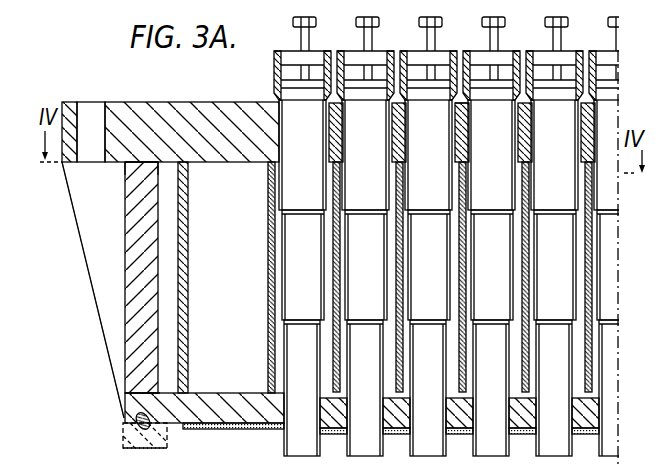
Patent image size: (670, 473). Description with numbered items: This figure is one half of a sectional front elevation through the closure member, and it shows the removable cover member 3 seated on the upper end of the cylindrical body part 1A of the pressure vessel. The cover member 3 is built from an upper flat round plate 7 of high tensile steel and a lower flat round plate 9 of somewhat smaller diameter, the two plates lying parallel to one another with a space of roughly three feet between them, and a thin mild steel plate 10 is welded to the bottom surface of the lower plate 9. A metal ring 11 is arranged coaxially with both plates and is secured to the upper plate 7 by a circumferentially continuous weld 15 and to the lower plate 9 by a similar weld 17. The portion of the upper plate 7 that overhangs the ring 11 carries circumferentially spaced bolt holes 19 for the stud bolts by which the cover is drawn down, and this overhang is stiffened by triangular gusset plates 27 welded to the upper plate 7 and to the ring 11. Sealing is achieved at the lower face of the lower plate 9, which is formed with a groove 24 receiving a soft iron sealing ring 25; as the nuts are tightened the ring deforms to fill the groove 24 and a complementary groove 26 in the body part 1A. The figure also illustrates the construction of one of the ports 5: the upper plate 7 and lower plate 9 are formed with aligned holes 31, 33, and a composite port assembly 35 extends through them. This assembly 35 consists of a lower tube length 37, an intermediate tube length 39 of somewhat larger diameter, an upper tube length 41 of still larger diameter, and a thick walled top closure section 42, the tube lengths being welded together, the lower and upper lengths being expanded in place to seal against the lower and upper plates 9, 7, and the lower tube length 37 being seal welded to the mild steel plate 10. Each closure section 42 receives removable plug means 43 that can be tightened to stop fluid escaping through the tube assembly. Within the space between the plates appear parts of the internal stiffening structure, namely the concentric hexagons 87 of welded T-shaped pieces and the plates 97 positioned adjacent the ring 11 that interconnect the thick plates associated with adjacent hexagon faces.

The cylindrical body part 1A is at (125, 442).
The cover member 3 is at (112, 235).
The ports 5 is at (443, 236).
The upper flat round plate 7 is at (211, 116).
The lower flat round plate 9 is at (125, 403).
The mild steel plate 10 is at (275, 424).
The metal ring 11 is at (147, 294).
The circumferentially continuous weld 15 is at (128, 163).
The circumferentially continuous weld 17 is at (145, 392).
The bolt holes 19 is at (80, 120).
The groove 24 is at (138, 415).
The soft iron sealing ring 25 is at (128, 425).
The complementary groove 26 is at (165, 437).
The triangular gusset plates 27 is at (108, 298).
The hole in upper plate 31 is at (468, 128).
The hole in lower plate 33 is at (474, 417).
The composite port assembly 35 is at (470, 252).
The lower tube length 37 is at (478, 358).
The intermediate tube length 39 is at (471, 281).
The upper tube length 41 is at (467, 201).
The thick walled top closure section 42 is at (460, 108).
The removable plug means 43 is at (507, 66).
The concentric hexagons 87 is at (268, 336).
The connecting plate 97 is at (186, 229).